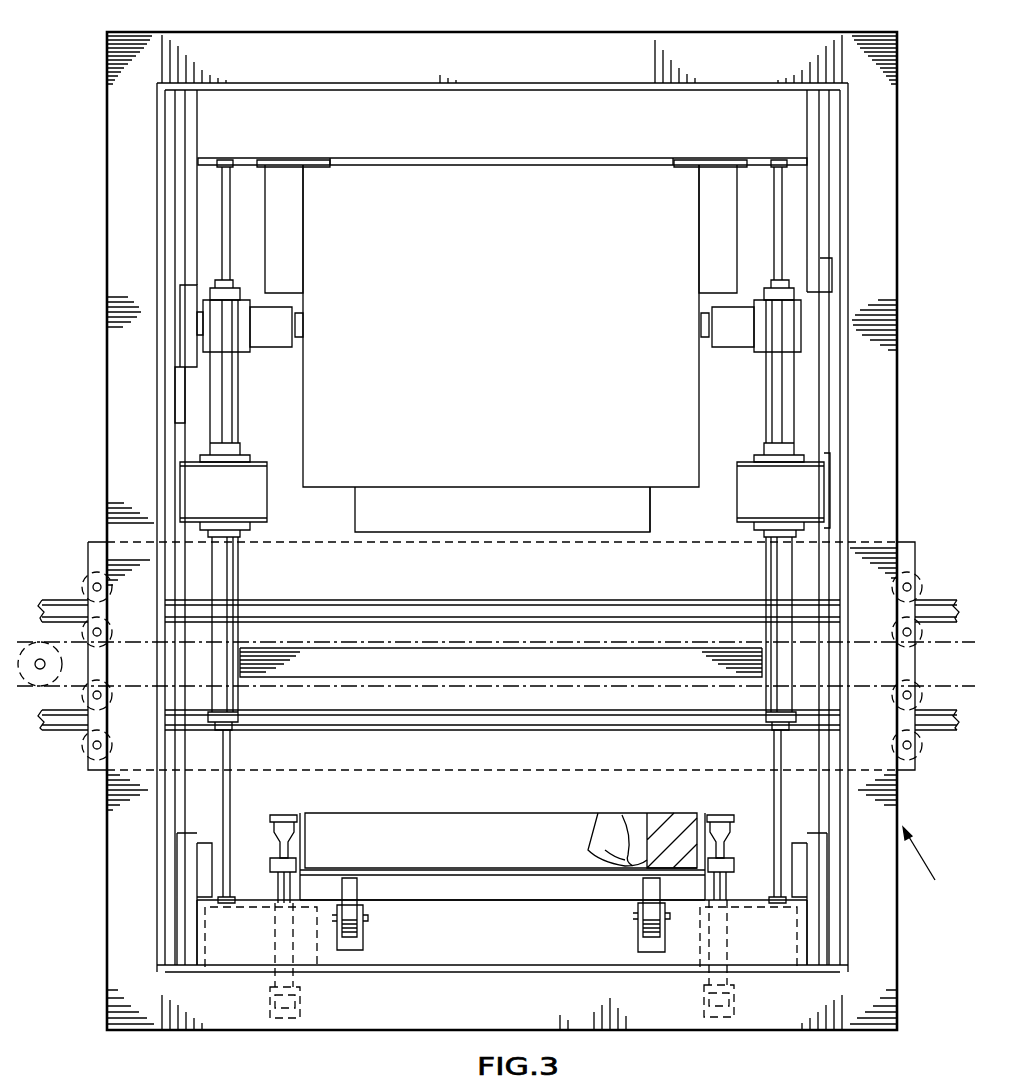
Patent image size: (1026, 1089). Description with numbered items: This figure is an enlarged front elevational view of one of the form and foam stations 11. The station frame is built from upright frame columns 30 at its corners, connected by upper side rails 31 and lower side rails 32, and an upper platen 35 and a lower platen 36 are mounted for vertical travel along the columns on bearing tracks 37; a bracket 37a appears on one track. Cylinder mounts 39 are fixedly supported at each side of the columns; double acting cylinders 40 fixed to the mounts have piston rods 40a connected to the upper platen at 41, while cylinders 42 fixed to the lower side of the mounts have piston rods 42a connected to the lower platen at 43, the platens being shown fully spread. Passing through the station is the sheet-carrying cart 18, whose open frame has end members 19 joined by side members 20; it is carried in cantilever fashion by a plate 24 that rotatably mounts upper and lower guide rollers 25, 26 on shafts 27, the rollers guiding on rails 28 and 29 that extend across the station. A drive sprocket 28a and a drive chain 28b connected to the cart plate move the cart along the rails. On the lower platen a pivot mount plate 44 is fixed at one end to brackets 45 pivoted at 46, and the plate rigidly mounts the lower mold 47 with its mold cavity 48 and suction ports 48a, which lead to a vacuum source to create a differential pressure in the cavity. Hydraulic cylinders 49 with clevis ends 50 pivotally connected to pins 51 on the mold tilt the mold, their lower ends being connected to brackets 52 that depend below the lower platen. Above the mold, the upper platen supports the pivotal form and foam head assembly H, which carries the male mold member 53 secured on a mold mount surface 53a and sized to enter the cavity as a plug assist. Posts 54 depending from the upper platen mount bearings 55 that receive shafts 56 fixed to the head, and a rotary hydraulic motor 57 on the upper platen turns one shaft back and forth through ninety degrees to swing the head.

The form and foam station 11 is at (934, 858).
The sheet-carrying cart 18 is at (613, 650).
The end members 19 is at (306, 677).
The front and rear side members 20 is at (520, 675).
The plate 24 is at (485, 585).
The upper guide rollers 25 is at (85, 577).
The lower guide rollers 26 is at (108, 700).
The shafts 27 is at (93, 587).
The upper rail 28 is at (565, 605).
The drive sprocket 28a is at (62, 664).
The drive chain 28b is at (860, 686).
The lower rail 29 is at (560, 730).
The upright frame columns 30 is at (107, 127).
The upper side rails 31 is at (586, 65).
The lower side rails 32 is at (518, 1011).
The upper platen 35 is at (491, 140).
The lower platen 36 is at (483, 950).
The bearing tracks 37 is at (172, 128).
The bracket 37a is at (198, 313).
The cylinder mounts 39 is at (210, 498).
The cylinders 40 is at (240, 425).
The piston rods 40a is at (235, 192).
The connection to upper platen 41 is at (226, 160).
The cylinders 42 is at (238, 575).
The piston rods 42a is at (231, 750).
The connection to lower platen 43 is at (225, 907).
The pivot mount plate 44 is at (518, 900).
The brackets 45 is at (357, 886).
The pivot 46 is at (363, 920).
The lower mold 47 is at (493, 856).
The mold cavity 48 is at (650, 815).
The suction ports 48a is at (620, 848).
The hydraulic cylinders 49 is at (284, 886).
The clevis ends 50 is at (275, 840).
The pins 51 is at (283, 818).
The brackets 52 is at (300, 950).
The male mold member 53 is at (505, 515).
The mold mount surface 53a is at (655, 500).
The posts 54 is at (296, 208).
The bearings 55 is at (278, 347).
The shafts 56 is at (303, 325).
The rotary hydraulic motor 57 is at (187, 348).
The form and foam head assembly H is at (508, 351).